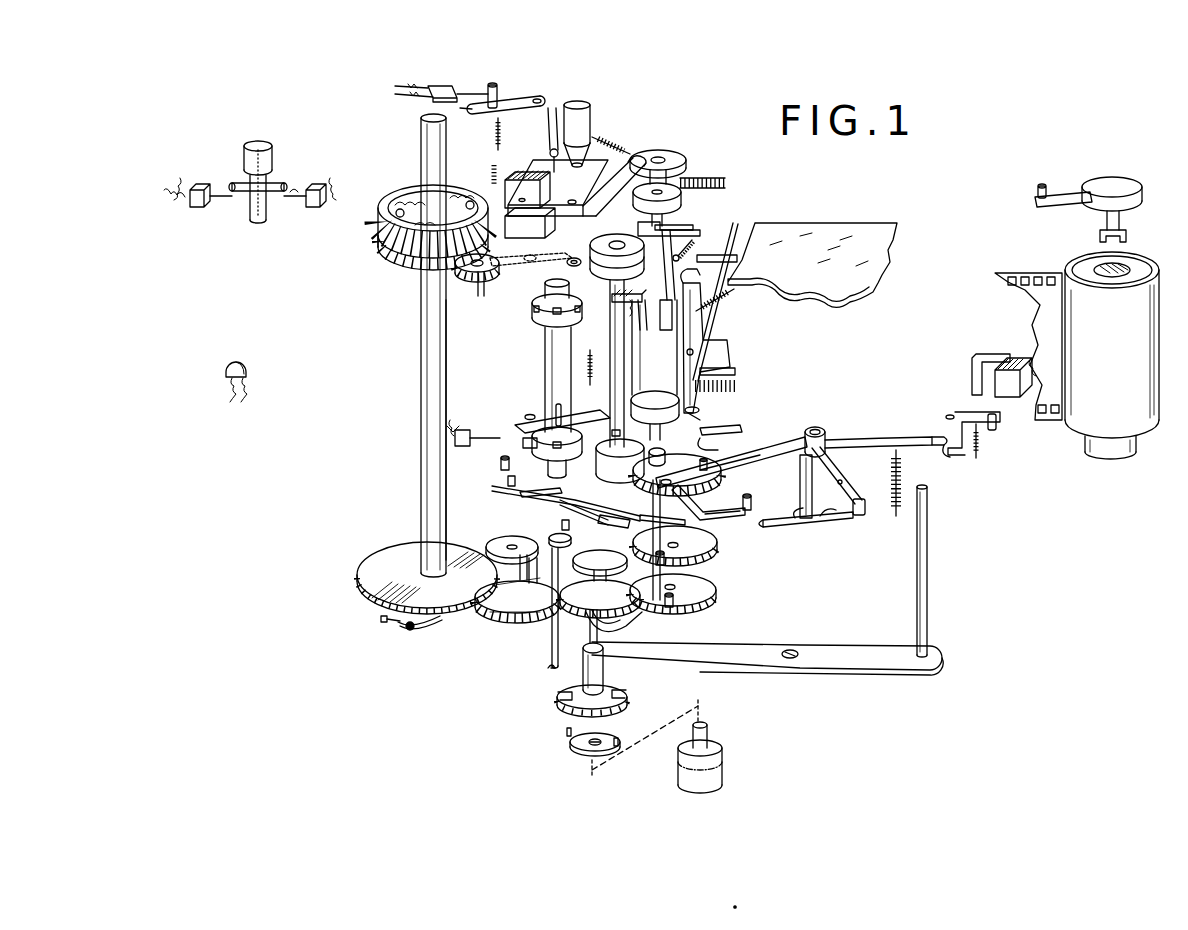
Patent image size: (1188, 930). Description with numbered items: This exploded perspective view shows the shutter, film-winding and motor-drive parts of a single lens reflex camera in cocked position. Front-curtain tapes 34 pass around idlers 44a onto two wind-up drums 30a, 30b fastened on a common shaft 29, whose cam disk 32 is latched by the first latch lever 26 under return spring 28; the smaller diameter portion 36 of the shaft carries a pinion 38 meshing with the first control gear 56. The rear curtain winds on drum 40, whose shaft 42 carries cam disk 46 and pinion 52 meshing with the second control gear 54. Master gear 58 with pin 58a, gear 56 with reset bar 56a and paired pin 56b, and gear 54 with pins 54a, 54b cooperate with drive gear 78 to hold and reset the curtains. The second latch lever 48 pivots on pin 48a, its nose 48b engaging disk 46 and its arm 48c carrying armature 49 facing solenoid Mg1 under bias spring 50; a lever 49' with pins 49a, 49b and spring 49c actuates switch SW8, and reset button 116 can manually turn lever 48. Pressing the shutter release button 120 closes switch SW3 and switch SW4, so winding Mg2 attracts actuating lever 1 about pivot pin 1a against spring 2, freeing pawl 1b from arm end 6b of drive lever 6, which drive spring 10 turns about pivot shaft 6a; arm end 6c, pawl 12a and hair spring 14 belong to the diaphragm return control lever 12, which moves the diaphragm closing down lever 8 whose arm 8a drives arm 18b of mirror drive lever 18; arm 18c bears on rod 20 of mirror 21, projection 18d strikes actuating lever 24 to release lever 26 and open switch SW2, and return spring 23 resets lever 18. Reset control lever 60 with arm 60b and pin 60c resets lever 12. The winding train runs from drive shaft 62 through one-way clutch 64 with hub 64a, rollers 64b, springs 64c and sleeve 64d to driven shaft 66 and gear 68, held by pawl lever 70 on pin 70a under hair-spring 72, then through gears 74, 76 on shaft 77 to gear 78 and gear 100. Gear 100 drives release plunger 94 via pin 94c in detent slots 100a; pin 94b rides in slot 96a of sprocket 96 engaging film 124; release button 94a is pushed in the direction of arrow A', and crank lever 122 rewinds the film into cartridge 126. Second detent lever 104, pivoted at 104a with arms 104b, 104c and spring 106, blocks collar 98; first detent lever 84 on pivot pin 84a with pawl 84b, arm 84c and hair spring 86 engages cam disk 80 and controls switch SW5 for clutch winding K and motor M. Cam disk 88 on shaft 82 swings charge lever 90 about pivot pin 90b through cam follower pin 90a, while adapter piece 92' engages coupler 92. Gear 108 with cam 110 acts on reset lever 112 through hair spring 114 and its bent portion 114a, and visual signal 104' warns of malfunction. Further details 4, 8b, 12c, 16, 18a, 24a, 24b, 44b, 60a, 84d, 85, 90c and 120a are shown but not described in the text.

The lever 1 is at (965, 411).
The pivot hole 1a is at (949, 414).
The hook end 1b is at (948, 452).
The spring 2 is at (973, 440).
The pin 4 is at (992, 428).
The link lever 6 is at (858, 438).
The boss 6a is at (818, 428).
The end portion 6b is at (936, 437).
The arm 6c is at (802, 508).
The lever 8 is at (763, 448).
The arm 8a is at (740, 460).
The block end 8b is at (862, 515).
The spring 10 is at (902, 471).
The lever 12 is at (818, 520).
The lever portion 12a is at (800, 522).
The lever end 12c is at (768, 526).
The pin 14 is at (832, 520).
The arm 16 is at (845, 478).
The lever plate 18 is at (705, 331).
The hole 18a is at (698, 352).
The hook 18b is at (708, 439).
The arm 18c is at (722, 262).
The hook end 18d is at (700, 277).
The rod 20 is at (735, 240).
The plate 21 is at (810, 232).
The spring 23 is at (722, 300).
The bar 24 is at (666, 283).
The foot 24a is at (690, 228).
The foot 24b is at (668, 302).
The bracket 26 is at (642, 227).
The pin 28 is at (680, 254).
The shaft 29 is at (610, 336).
The plate 30a is at (615, 301).
The plate 30b is at (603, 431).
The disc 32 is at (598, 243).
The spring 34 is at (727, 183).
The shaft 36 is at (653, 540).
The gear 38 is at (600, 599).
The bracket 40 is at (716, 372).
The cylinder 42 is at (630, 440).
The disc 44a is at (682, 204).
The ring 44b is at (694, 412).
The disc 46 is at (676, 158).
The arm 48 is at (600, 188).
The plate hole 48a is at (572, 200).
The hook 48b is at (636, 156).
The coil 48c is at (494, 163).
The hole 49 is at (506, 193).
The lever 49' is at (509, 109).
The pin 49a is at (548, 150).
The post 49b is at (497, 90).
The spring 49c is at (494, 130).
The spring 50 is at (606, 140).
The boss 52 is at (665, 458).
The gear 54 is at (705, 484).
The pin 54a is at (710, 468).
The hole 54b is at (679, 545).
The gear 56 is at (715, 546).
The pin 56a is at (665, 558).
The pin 56b is at (670, 606).
The gear 58 is at (700, 600).
The hole 58a is at (676, 587).
The arm 60 is at (735, 513).
The arm portion 60a is at (712, 516).
The hole 60b is at (659, 480).
The pin 60c is at (751, 500).
The shaft 62 is at (421, 165).
The gear 64 is at (412, 230).
The gear rim 64a is at (392, 258).
The spring 64b is at (450, 198).
The spring 64c is at (395, 207).
The rim 64d is at (379, 243).
The shaft 66 is at (421, 376).
The disc 68 is at (400, 555).
The arm 70 is at (432, 620).
The pivot 70a is at (413, 628).
The screw 72 is at (385, 624).
The disc 74 is at (495, 542).
The gear 76 is at (505, 615).
The shaft 77 is at (532, 618).
The shaft 78 is at (589, 637).
The disc 80 is at (548, 536).
The disc 82 is at (600, 576).
The lever 84 is at (598, 520).
The arm 84a is at (495, 490).
The arm 84b is at (560, 503).
The arm 84c is at (660, 522).
The pin 84d is at (507, 482).
The pin 85 is at (499, 467).
The cylinder 86 is at (640, 476).
The pawl 88 is at (617, 620).
The bracket 90 is at (864, 666).
The boss 90a is at (605, 655).
The hole 90b is at (791, 660).
The rod 90c is at (928, 565).
The slotted disc 92 is at (581, 701).
The disc 92' is at (618, 739).
The rod 94 is at (551, 661).
The rod end 94a is at (548, 670).
The block 94b is at (524, 445).
The shaft 94c is at (520, 582).
The column 96 is at (552, 387).
The key 96a is at (553, 423).
The pin 98 is at (560, 522).
The gear 100 is at (518, 602).
The gear surface 100a is at (497, 565).
The plate 104 is at (548, 415).
The cap 104' is at (223, 376).
The hole 104a is at (528, 414).
The bar 104b is at (724, 423).
The arm 104c is at (523, 491).
The spring 106 is at (591, 380).
The gear 108 is at (466, 276).
The shaft 110 is at (481, 298).
The ring 112 is at (575, 268).
The arm 114 is at (510, 268).
The hole 114a is at (529, 263).
The cylinder 116 is at (577, 104).
The cylinder 120 is at (271, 156).
The bar 120a is at (280, 184).
The lever 122 is at (1066, 206).
The film 124 is at (1030, 275).
The film cartridge 126 is at (1086, 440).
The magnet Mg1 is at (520, 175).
The magnet Mg2 is at (1010, 360).
The switch SW2 is at (644, 328).
The switch SW3 is at (196, 208).
The switch SW4 is at (312, 208).
The switch SW5 is at (462, 430).
The switch SW8 is at (440, 86).
The mark A' is at (552, 676).
The motor K is at (722, 758).
The motor M is at (722, 774).